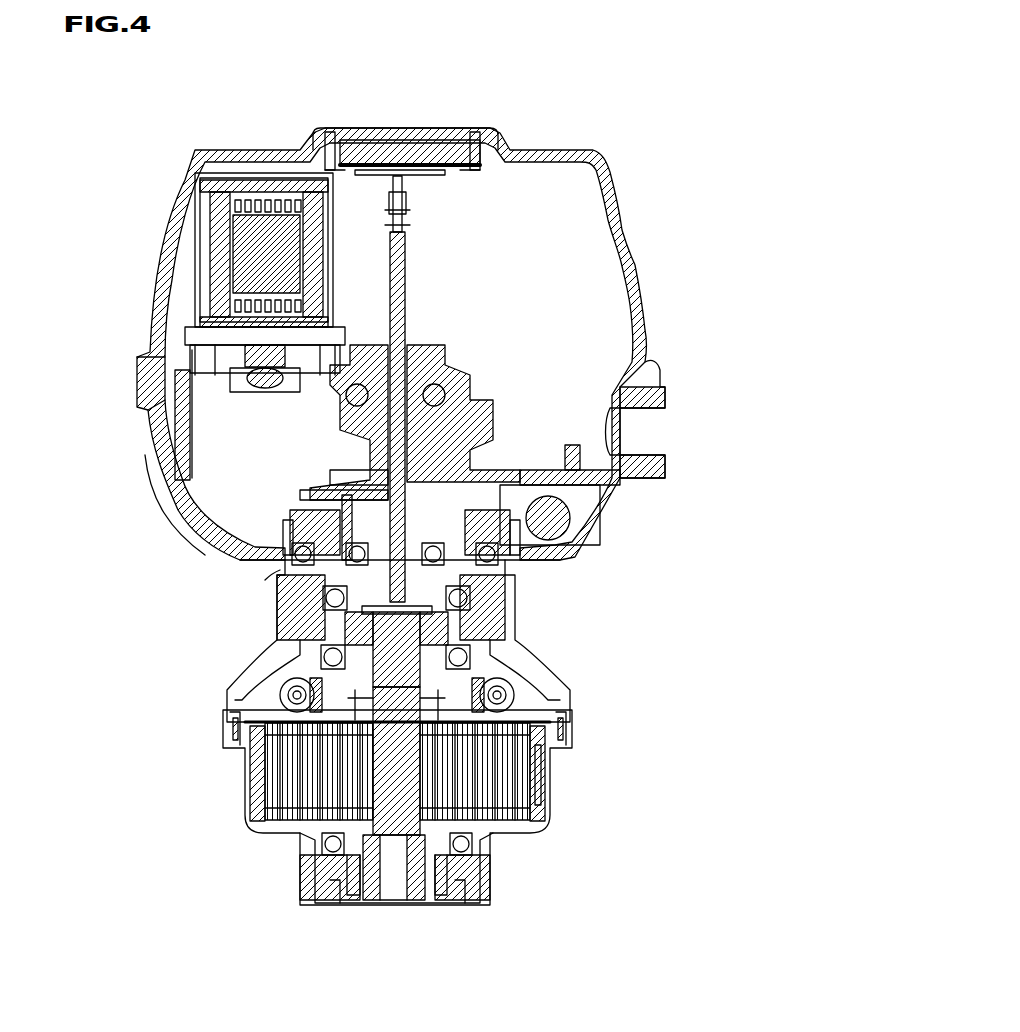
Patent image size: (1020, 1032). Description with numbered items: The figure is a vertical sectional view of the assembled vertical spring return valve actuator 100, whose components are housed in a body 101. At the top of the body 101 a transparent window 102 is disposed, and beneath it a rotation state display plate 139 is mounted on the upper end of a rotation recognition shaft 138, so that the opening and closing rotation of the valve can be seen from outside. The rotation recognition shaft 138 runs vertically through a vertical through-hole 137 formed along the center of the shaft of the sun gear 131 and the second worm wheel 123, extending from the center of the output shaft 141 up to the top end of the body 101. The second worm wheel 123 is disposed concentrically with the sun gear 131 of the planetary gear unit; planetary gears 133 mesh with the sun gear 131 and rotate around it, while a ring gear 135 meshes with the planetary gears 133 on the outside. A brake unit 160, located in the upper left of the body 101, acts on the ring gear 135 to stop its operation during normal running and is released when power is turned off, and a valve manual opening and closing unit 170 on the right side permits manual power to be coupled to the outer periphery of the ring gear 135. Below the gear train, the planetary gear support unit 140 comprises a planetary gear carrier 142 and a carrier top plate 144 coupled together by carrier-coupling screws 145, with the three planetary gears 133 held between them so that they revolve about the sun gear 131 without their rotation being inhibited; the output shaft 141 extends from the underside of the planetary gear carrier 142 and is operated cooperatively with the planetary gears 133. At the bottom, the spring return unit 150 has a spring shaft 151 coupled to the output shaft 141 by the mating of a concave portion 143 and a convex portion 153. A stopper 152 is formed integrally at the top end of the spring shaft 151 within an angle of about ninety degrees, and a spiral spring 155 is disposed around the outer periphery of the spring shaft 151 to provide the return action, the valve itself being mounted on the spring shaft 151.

The vertical spring return valve actuator 100 is at (690, 198).
The body 101 is at (180, 487).
The transparent window 102 is at (395, 140).
The second worm wheel 123 is at (445, 432).
The sun gear 131 is at (360, 475).
The planetary gears 133 is at (288, 523).
The ring gear 135 is at (283, 540).
The vertical through-hole 137 is at (412, 390).
The rotation recognition shaft 138 is at (407, 280).
The rotation state display plate 139 is at (425, 177).
The planetary gear support unit 140 is at (265, 605).
The output shaft 141 is at (510, 606).
The planetary gear carrier 142 is at (268, 585).
The concave portion 143 is at (470, 630).
The carrier top plate 144 is at (345, 487).
The carrier-coupling screws 145 is at (340, 505).
The spring return unit 150 is at (398, 832).
The spring shaft 151 is at (378, 838).
The stopper 152 is at (292, 692).
The convex portion 153 is at (478, 642).
The spiral spring 155 is at (510, 782).
The brake unit 160 is at (218, 356).
The valve manual opening and closing unit 170 is at (575, 528).